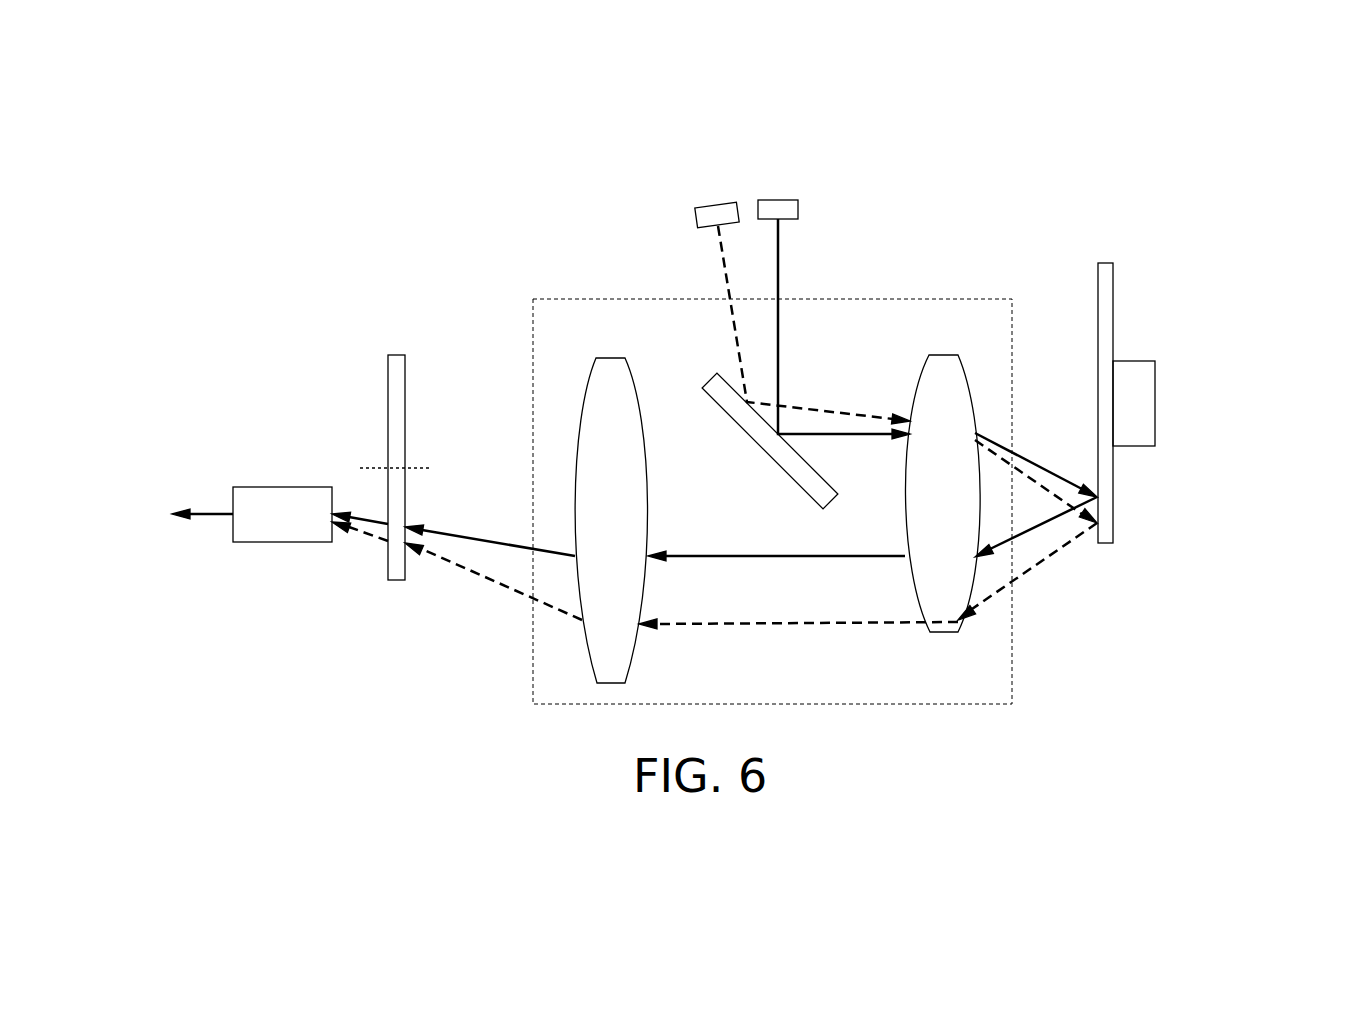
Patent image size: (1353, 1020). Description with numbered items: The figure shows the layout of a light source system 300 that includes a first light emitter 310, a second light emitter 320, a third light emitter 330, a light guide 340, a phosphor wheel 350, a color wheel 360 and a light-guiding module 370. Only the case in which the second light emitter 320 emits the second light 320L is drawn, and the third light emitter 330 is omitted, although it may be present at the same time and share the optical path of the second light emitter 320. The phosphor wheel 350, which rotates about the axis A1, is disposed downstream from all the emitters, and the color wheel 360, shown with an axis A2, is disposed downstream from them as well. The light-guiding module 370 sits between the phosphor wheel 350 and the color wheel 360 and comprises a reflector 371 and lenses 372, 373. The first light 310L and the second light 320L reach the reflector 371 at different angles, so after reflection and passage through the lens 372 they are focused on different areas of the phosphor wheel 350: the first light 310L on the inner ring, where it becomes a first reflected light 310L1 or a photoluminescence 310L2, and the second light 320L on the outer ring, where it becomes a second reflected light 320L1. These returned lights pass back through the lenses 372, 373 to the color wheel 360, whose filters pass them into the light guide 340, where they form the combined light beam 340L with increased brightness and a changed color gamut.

The light source system 300 is at (700, 406).
The first light emitter 310 is at (778, 200).
The first light 310L is at (778, 255).
The first reflected light 310L1 is at (849, 515).
The photoluminescence 310L2 is at (1048, 517).
The second light emitter 320 is at (697, 188).
The third light emitter 330 is at (713, 202).
The second light 320L is at (723, 272).
The second reflected light 320L1 is at (1042, 560).
The light guide 340 is at (284, 487).
The combined light beam 340L is at (203, 518).
The phosphor wheel 350 is at (1105, 263).
The color wheel 360 is at (397, 355).
The light-guiding module 370 is at (573, 705).
The reflector 371 is at (715, 377).
The lens 372 is at (944, 355).
The lens 373 is at (611, 358).
The axis A1 is at (1155, 403).
The second region A2 is at (418, 463).